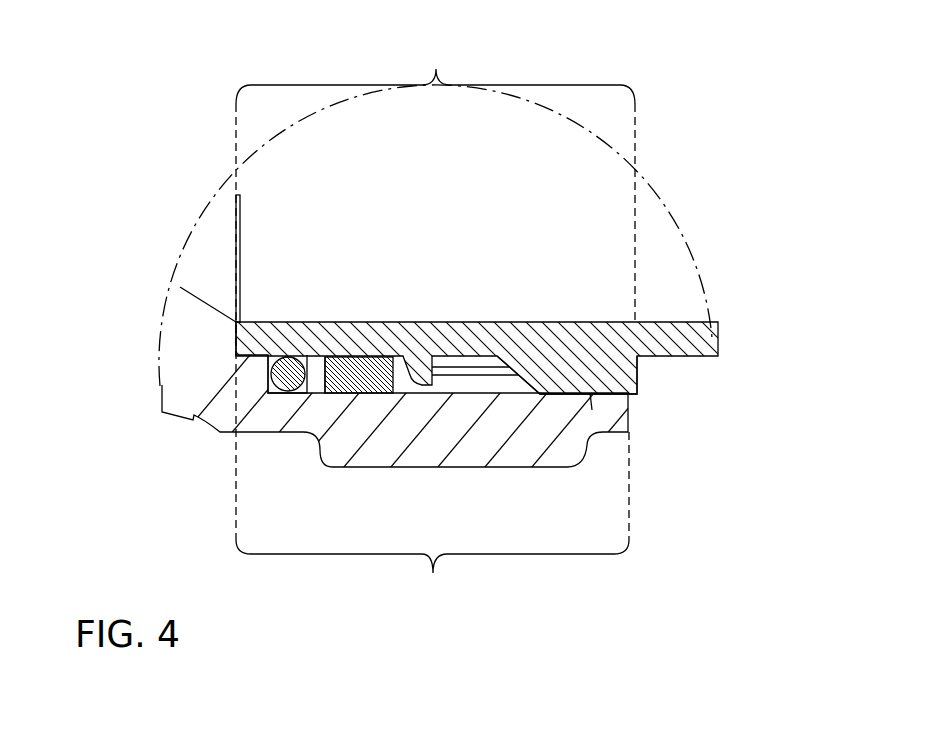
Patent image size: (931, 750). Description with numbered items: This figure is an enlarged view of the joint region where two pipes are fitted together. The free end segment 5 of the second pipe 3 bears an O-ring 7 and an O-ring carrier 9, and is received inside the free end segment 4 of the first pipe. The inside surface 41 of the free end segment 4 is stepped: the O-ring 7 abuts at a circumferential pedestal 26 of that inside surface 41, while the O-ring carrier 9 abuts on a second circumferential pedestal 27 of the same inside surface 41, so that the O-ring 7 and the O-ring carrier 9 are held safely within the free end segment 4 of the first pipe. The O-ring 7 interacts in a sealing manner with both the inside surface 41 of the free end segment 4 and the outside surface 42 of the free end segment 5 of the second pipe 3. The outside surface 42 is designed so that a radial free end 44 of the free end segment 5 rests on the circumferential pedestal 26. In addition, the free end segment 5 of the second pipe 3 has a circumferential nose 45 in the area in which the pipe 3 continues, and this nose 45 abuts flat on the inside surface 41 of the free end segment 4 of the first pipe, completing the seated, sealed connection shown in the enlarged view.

The second pipe 3 is at (720, 327).
The free end segment of the first pipe 4 is at (495, 554).
The free end segment of the second pipe 5 is at (547, 85).
The O-ring 7 is at (237, 432).
The O-ring carrier 9 is at (374, 380).
The circumferential pedestal 26 is at (251, 374).
The second circumferential pedestal 27 is at (316, 407).
The inside surface 41 is at (449, 380).
The outside surface 42 is at (590, 393).
The radial free end 44 is at (222, 329).
The circumferential nose 45 is at (587, 382).